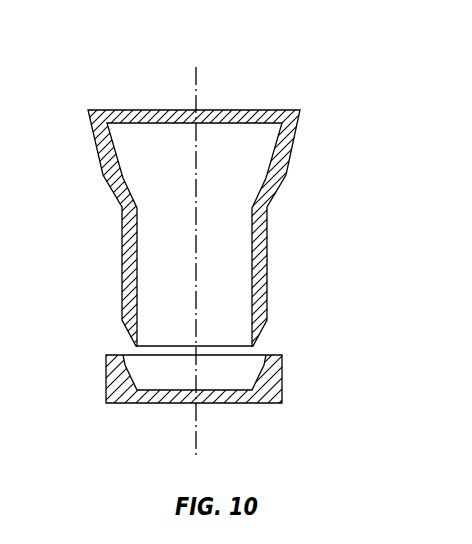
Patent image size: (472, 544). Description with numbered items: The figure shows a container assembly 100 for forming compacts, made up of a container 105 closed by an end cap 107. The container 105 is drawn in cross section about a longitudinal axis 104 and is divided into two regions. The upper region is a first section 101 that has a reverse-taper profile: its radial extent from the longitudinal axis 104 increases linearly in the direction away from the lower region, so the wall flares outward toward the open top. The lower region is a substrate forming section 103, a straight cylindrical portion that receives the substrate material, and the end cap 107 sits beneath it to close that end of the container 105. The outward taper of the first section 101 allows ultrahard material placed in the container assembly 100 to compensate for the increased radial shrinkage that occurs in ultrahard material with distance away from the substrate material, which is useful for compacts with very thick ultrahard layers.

The container assembly 100 is at (229, 236).
The first section 101 is at (328, 185).
The substrate forming section 103 is at (328, 345).
The longitudinal axis 104 is at (197, 92).
The container 105 is at (229, 229).
The end cap 107 is at (277, 380).